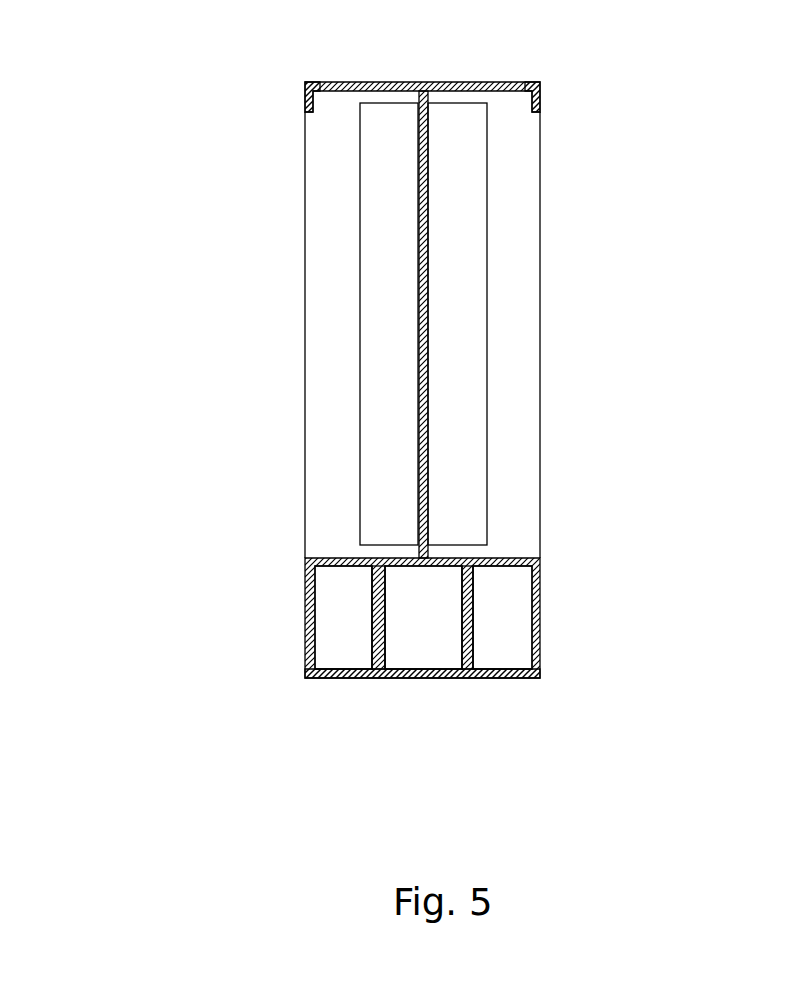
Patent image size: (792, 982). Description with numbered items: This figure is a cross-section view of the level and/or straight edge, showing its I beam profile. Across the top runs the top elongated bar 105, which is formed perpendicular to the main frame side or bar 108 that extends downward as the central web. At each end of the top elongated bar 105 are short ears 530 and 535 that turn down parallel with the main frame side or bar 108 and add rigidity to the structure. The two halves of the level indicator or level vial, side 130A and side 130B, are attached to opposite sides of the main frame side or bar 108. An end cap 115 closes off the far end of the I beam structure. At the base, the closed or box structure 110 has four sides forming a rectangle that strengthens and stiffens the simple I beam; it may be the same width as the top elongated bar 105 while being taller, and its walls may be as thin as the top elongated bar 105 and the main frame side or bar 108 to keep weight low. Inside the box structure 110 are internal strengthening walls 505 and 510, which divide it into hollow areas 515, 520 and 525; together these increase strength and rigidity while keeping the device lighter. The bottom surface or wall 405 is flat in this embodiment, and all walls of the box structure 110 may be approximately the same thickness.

The top elongated bar 105 is at (457, 82).
The main frame side or bar 108 is at (420, 250).
The closed or box structure 110 is at (295, 562).
The end cap 115 is at (520, 213).
The level vial side 130A is at (465, 157).
The level vial side 130B is at (380, 157).
The bottom surface or wall 405 is at (520, 676).
The internal strengthening wall 505 is at (370, 627).
The internal strengthening wall 510 is at (463, 627).
The hollow area 515 is at (323, 658).
The hollow area 520 is at (418, 658).
The hollow area 525 is at (522, 578).
The short ear 530 is at (540, 88).
The short ear 535 is at (307, 92).